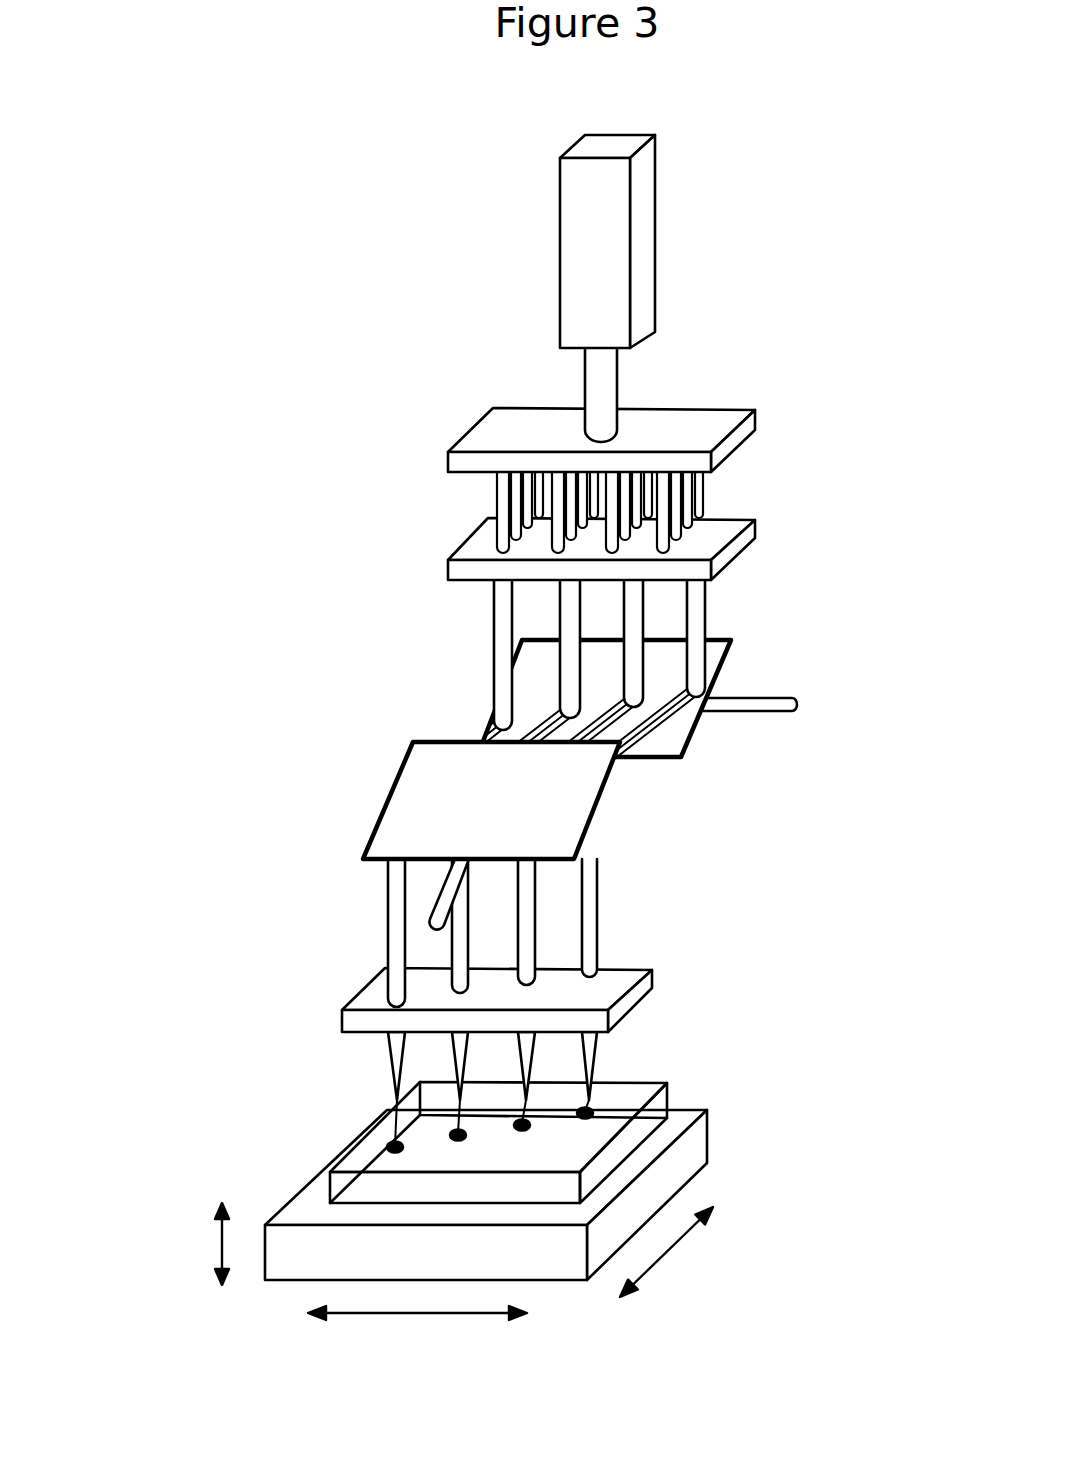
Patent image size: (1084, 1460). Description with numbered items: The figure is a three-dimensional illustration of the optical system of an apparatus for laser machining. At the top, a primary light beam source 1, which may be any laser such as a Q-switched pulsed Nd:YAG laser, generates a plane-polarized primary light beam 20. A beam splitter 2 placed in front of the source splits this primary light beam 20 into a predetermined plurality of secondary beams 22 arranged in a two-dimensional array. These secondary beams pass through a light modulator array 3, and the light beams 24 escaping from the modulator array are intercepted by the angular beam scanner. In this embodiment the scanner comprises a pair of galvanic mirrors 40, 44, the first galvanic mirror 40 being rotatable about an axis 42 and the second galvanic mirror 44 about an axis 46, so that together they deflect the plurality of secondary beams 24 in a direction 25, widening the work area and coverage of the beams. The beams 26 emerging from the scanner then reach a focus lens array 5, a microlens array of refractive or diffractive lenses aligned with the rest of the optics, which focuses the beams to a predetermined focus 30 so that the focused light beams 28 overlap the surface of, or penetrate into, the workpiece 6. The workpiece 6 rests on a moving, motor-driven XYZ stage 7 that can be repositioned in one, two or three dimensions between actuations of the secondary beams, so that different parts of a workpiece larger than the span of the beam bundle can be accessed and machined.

The primary light beam source 1 is at (560, 217).
The primary light beam 20 is at (602, 378).
The beam splitter 2 is at (477, 437).
The secondary beams 22 is at (495, 497).
The light modulator array 3 is at (450, 557).
The light beams 24 is at (520, 638).
The galvanic mirror 40 is at (732, 640).
The direction 25 is at (642, 740).
The axis 42 is at (763, 702).
The galvanic mirror 44 is at (390, 797).
The axis 46 is at (452, 900).
The beams 26 is at (597, 900).
The focus lens array 5 is at (350, 1000).
The focused light beams 28 is at (390, 1062).
The workpiece 6 is at (657, 1105).
The focus 30 is at (390, 1145).
The XYZ stage 7 is at (697, 1147).